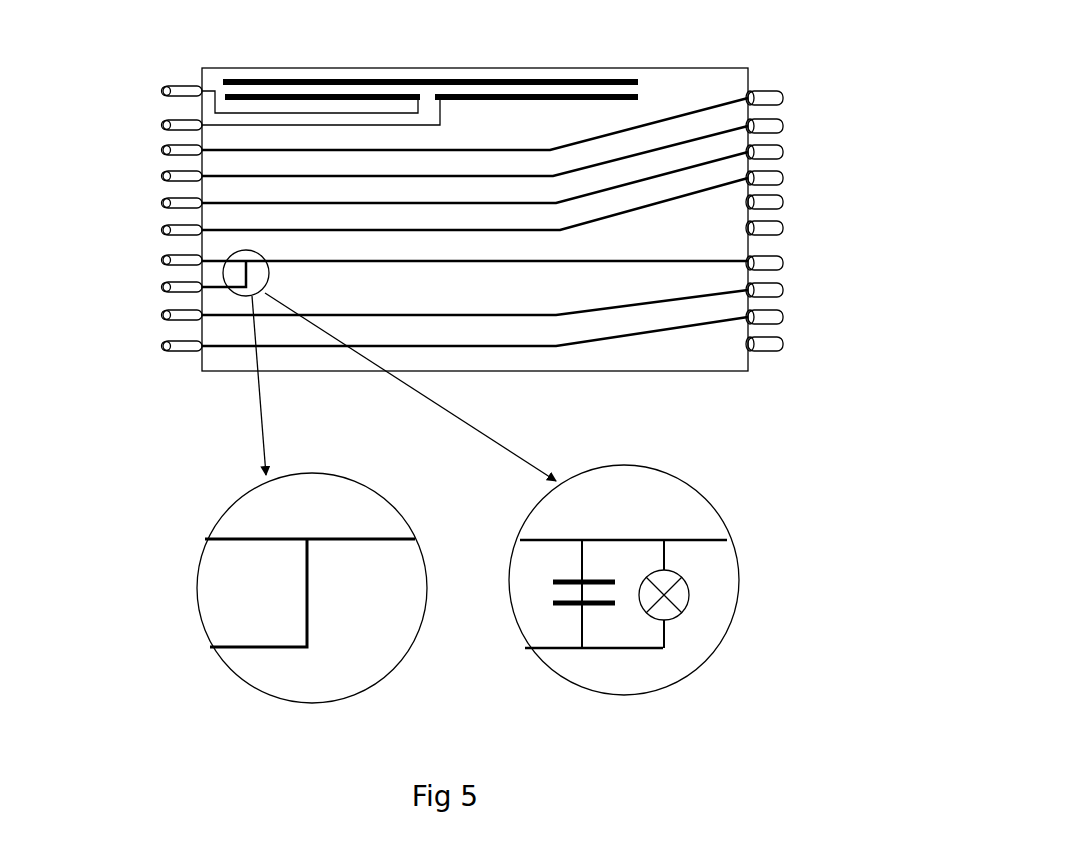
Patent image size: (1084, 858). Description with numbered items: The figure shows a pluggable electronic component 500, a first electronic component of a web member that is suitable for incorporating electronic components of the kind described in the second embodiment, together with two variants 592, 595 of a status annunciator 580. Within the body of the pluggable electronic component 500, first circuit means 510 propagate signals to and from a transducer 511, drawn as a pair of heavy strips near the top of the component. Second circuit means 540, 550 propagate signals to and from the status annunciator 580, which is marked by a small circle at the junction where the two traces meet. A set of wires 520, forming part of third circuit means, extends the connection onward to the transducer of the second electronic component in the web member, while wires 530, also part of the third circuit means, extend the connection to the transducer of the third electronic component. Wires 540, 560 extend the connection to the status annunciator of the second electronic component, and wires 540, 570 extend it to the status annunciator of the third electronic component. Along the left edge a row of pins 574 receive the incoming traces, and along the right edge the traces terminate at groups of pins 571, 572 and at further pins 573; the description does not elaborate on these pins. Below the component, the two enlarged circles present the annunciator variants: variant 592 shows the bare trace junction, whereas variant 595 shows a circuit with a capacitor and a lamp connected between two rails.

The pluggable electronic component 500 is at (380, 69).
The first circuit means 510 is at (212, 118).
The transducer 511 is at (516, 75).
The wires 520 is at (225, 170).
The wires 530 is at (218, 225).
The second circuit means 540 is at (223, 257).
The second circuit means 550 is at (223, 282).
The wires 560 is at (223, 312).
The wires 570 is at (220, 340).
The first group of output pins 571 is at (783, 178).
The second group of output pins 572 is at (785, 317).
The unconnected output pins 573 is at (782, 197).
The input pins 574 is at (165, 113).
The status annunciator 580 is at (515, 513).
The status annunciator variant 592 is at (235, 687).
The status annunciator variant 595 is at (750, 578).